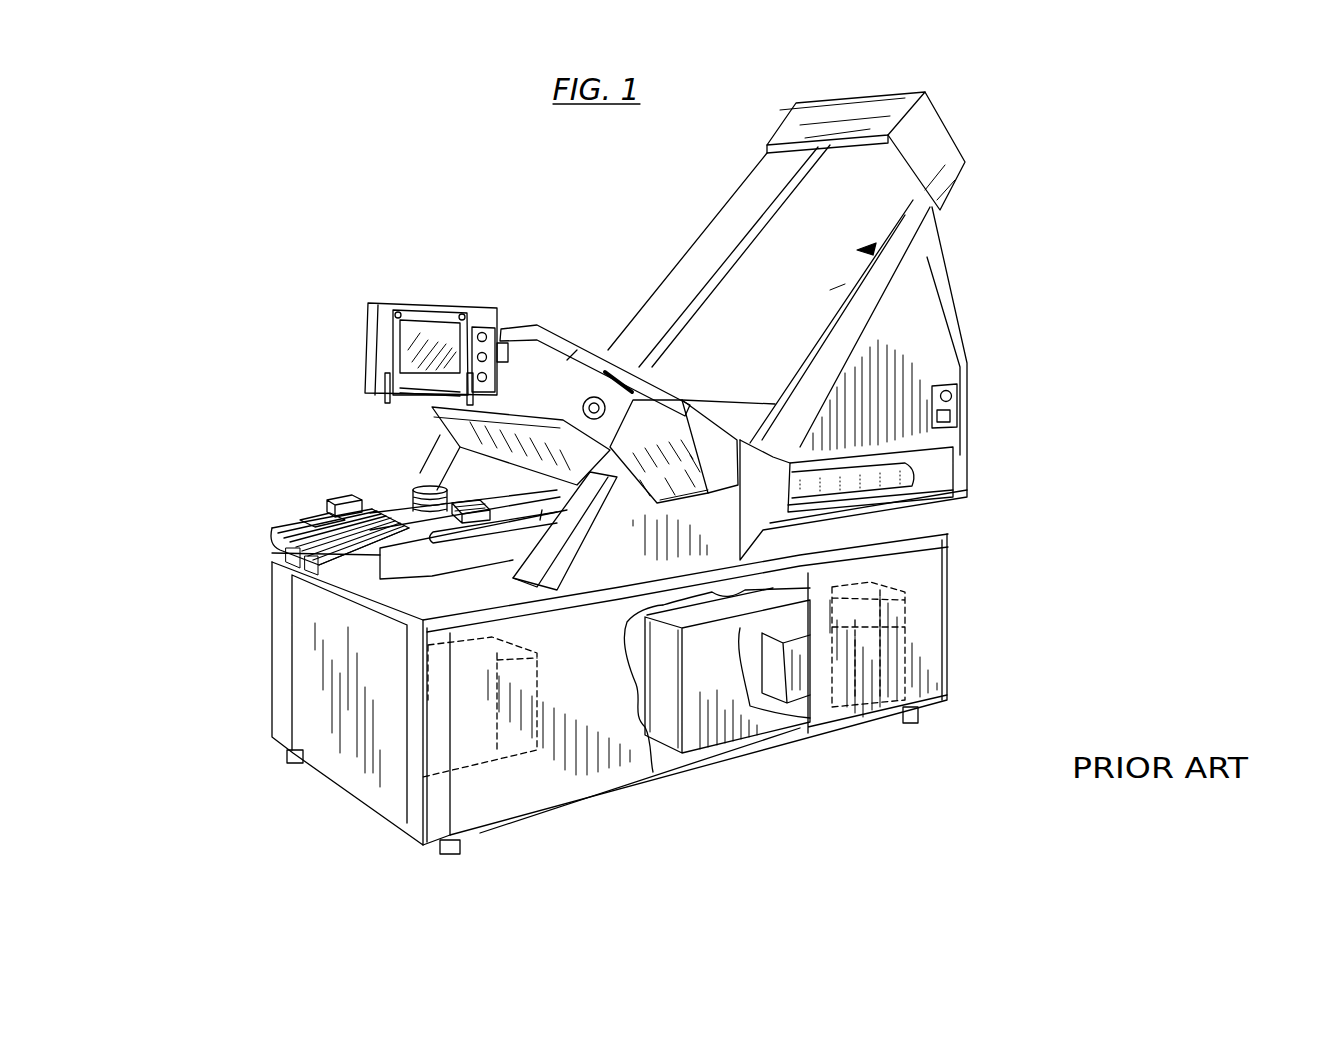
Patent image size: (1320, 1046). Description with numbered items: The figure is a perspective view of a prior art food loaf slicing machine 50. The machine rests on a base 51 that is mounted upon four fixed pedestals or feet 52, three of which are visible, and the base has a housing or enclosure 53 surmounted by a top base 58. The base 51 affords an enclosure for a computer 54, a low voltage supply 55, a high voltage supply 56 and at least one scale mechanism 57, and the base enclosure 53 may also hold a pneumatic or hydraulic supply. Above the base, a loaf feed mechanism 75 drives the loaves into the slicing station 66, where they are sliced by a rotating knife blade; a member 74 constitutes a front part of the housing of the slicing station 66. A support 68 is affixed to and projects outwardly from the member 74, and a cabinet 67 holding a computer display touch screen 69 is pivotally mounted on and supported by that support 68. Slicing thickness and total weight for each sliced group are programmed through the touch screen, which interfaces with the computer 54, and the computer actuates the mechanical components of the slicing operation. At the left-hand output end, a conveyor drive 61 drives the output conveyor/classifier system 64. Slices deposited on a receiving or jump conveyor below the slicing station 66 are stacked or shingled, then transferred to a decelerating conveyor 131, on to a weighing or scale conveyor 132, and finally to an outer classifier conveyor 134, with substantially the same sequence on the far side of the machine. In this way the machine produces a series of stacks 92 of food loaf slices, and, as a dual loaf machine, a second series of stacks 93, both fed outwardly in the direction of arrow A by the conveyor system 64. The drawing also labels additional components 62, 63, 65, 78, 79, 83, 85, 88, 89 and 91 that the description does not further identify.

The food loaf slicing machine 50 is at (594, 222).
The base 51 is at (621, 713).
The feet 52 is at (290, 756).
The housing or enclosure 53 is at (562, 793).
The computer 54 is at (668, 738).
The low voltage supply 55 is at (778, 697).
The high voltage supply 56 is at (653, 672).
The scale mechanism 57 is at (497, 755).
The top base 58 is at (419, 548).
The conveyor drive 61 is at (333, 495).
The table top 62 is at (595, 571).
The support arm 63 is at (440, 460).
The output conveyor/classifier system 64 is at (303, 519).
The mounting plate 65 is at (432, 410).
The slicing station 66 is at (575, 350).
The cabinet 67 is at (370, 330).
The support 68 is at (503, 342).
The computer display touch screen 69 is at (430, 325).
The member 74 is at (520, 358).
The loaf feed mechanism 75 is at (865, 249).
The arm lower face 78 is at (830, 290).
The inclined arm 79 is at (730, 215).
The housing 83 is at (930, 328).
The discharge slot 85 is at (950, 488).
The control panel 88 is at (957, 410).
The pivot 89 is at (606, 412).
The discharge roll 91 is at (895, 467).
The stacks of food loaf slices 92 is at (480, 513).
The stacks of food loaf slices 93 is at (418, 487).
The decelerating conveyor 131 is at (542, 510).
The weighing or scale conveyor 132 is at (372, 480).
The outer classifier conveyor 134 is at (300, 520).